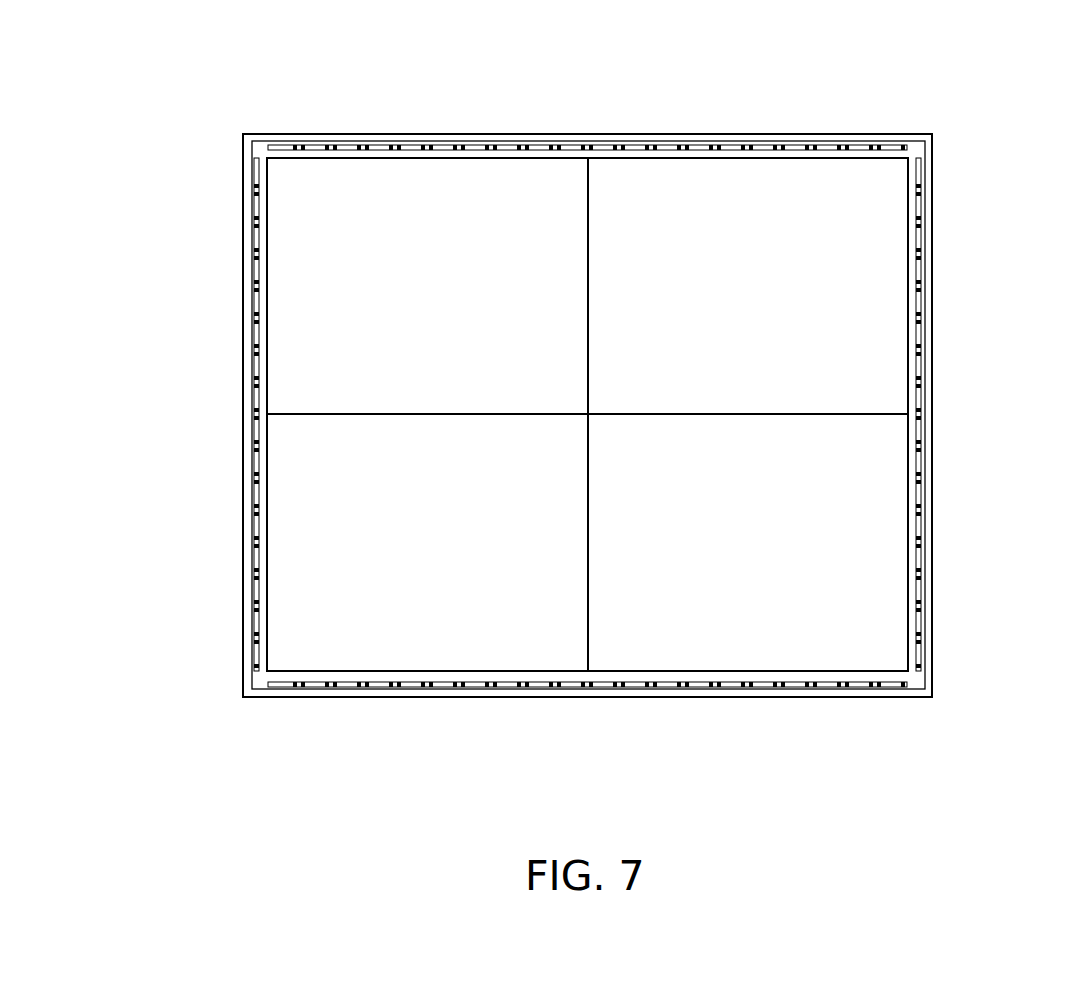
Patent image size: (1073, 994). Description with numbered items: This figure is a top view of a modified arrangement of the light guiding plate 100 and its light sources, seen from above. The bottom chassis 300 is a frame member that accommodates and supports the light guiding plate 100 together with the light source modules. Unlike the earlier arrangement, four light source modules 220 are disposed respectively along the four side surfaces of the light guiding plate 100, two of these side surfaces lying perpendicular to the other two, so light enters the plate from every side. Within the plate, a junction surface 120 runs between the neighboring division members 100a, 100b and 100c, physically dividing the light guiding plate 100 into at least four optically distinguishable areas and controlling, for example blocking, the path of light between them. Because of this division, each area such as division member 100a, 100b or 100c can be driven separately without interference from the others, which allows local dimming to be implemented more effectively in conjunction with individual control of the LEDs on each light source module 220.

The light guiding plate 100 is at (590, 348).
The division member 100a is at (452, 215).
The division member 100b is at (768, 193).
The division member 100c is at (322, 507).
The junction surface 120 is at (588, 197).
The light source module 220 is at (264, 148).
The bottom chassis 300 is at (573, 703).